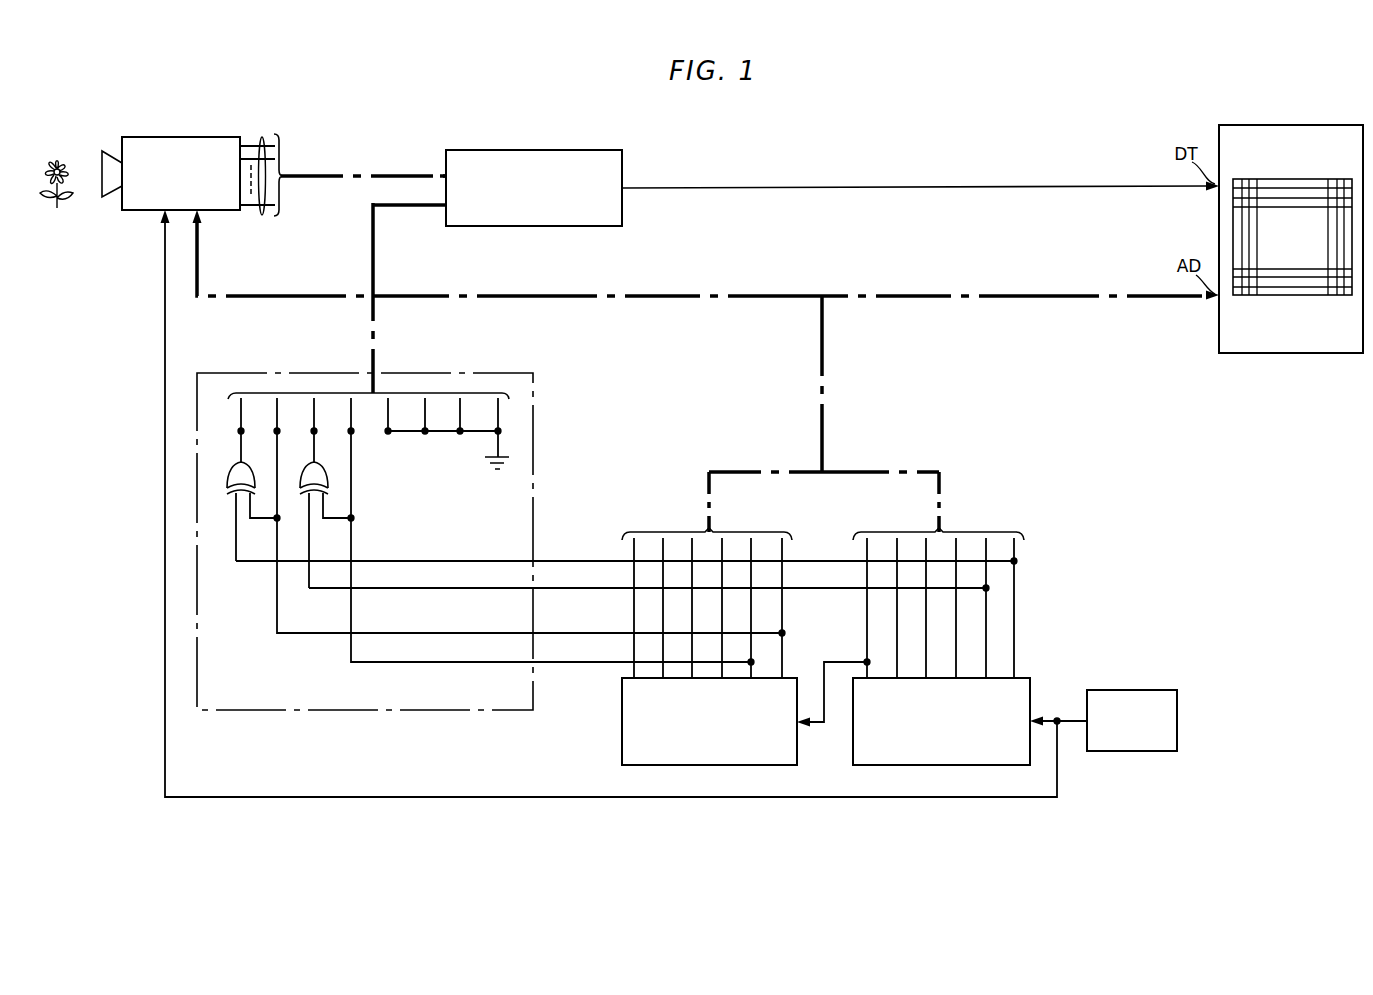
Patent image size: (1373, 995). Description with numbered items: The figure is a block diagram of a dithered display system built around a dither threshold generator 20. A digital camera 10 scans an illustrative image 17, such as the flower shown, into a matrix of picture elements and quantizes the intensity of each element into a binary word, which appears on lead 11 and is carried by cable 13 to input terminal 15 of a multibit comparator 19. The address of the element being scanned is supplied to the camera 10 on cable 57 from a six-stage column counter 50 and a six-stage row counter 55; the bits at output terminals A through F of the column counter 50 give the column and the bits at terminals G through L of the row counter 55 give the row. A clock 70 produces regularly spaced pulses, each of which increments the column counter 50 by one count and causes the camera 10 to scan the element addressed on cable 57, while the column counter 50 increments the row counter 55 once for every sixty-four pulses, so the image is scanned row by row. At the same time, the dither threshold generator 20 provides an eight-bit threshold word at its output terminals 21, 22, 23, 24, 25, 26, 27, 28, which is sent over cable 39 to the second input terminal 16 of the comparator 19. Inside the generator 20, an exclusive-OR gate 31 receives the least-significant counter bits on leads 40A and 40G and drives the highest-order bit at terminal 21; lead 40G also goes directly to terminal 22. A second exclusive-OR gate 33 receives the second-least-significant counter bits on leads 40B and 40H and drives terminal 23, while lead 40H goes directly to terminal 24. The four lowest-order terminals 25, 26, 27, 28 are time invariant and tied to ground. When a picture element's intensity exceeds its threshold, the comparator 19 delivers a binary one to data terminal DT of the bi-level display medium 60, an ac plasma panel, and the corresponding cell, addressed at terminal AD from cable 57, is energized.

The digital camera 10 is at (187, 137).
The lead 11 is at (262, 137).
The cable 13 is at (330, 174).
The input terminal 15 is at (446, 173).
The input terminal 16 is at (446, 208).
The scanned image 17 is at (54, 156).
The multibit comparator 19 is at (535, 150).
The dither threshold generator 20 is at (540, 393).
The output terminal 21 is at (240, 431).
The output terminal 22 is at (276, 431).
The output terminal 23 is at (313, 431).
The output terminal 24 is at (350, 431).
The output terminal 25 is at (387, 431).
The output terminal 26 is at (424, 431).
The output terminal 27 is at (459, 431).
The output terminal 28 is at (497, 431).
The exclusive-OR gate 31 is at (232, 481).
The exclusive-OR gate 33 is at (312, 481).
The cable 39 is at (372, 257).
The lead 40A is at (439, 561).
The lead 40B is at (439, 588).
The lead 40G is at (439, 633).
The lead 40H is at (439, 662).
The six-stage column counter 50 is at (853, 752).
The six-stage row counter 55 is at (622, 752).
The cable 57 is at (921, 293).
The bi-level display medium 60 is at (1288, 353).
The clock 70 is at (1178, 720).